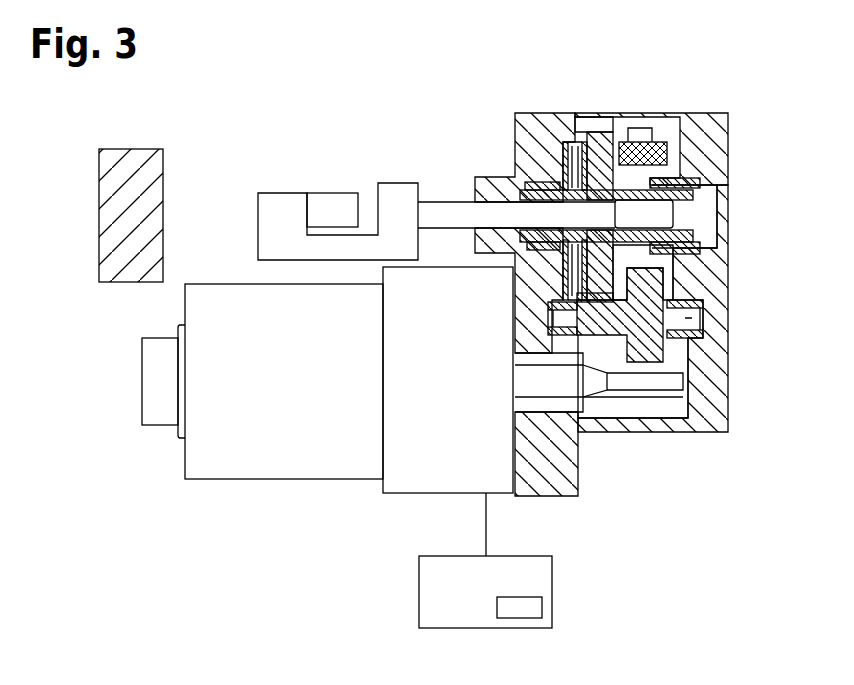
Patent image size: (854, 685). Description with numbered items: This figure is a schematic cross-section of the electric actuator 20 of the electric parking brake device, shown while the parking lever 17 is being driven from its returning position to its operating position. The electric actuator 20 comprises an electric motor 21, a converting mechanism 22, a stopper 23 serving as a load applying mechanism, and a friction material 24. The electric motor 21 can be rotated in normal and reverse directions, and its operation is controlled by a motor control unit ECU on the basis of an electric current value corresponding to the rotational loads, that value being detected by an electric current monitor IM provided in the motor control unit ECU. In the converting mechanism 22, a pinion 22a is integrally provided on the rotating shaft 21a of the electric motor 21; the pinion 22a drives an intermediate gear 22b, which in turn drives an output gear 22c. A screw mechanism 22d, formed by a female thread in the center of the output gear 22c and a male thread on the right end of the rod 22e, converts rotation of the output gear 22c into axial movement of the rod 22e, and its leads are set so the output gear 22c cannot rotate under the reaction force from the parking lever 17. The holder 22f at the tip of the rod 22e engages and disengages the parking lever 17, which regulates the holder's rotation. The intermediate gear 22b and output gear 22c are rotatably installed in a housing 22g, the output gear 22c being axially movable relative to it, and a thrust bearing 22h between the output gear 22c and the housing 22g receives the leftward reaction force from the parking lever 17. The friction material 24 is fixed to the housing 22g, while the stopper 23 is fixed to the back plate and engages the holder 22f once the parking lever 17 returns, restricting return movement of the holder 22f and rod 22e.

The parking lever 17 is at (337, 192).
The electric actuator 20 is at (224, 491).
The electric motor 21 is at (396, 494).
The rotating shaft 21a is at (523, 382).
The converting mechanism 22 is at (729, 257).
The pinion 22a is at (645, 400).
The intermediate gear 22b is at (692, 318).
The output gear 22c is at (600, 130).
The screw mechanism 22d is at (674, 205).
The rod 22e is at (449, 201).
The holder 22f is at (283, 192).
The housing 22g is at (722, 401).
The thrust bearing 22h is at (565, 160).
The stopper 23 is at (141, 148).
The friction material 24 is at (637, 141).
The motor control unit ECU is at (419, 593).
The electric current monitor IM is at (542, 607).